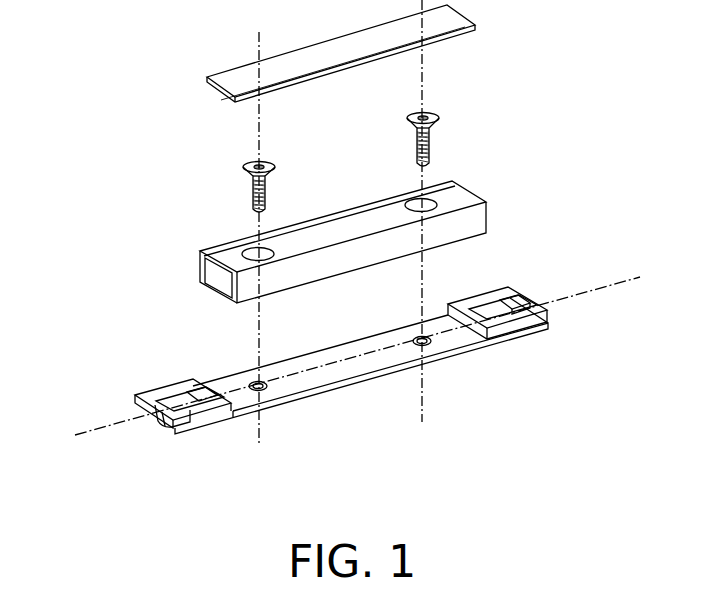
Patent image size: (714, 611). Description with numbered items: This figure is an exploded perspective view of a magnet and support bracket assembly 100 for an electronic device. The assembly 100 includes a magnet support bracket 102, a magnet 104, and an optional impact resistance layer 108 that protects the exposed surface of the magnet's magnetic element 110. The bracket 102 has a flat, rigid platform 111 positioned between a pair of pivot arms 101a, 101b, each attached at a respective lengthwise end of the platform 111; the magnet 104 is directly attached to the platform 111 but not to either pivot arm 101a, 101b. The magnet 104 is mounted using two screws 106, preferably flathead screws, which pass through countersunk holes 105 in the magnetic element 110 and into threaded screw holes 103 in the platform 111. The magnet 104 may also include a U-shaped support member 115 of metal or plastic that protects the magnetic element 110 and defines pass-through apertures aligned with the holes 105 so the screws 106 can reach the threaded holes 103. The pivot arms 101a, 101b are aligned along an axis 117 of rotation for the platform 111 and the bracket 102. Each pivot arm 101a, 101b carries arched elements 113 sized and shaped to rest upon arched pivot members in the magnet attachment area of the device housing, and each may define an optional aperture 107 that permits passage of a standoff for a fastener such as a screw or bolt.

The magnet and support bracket assembly 100 is at (392, 486).
The pivot arm 101a is at (123, 432).
The pivot arm 101b is at (559, 298).
The magnet support bracket 102 is at (343, 372).
The threaded screw holes 103 is at (429, 340).
The magnet 104 is at (339, 237).
The holes 105 is at (427, 206).
The screws 106 is at (408, 120).
The aperture 107 is at (186, 450).
The impact resistance layer 108 is at (207, 78).
The magnetic element 110 is at (380, 217).
The platform 111 is at (300, 380).
The arched elements 113 is at (527, 294).
The U-shaped support member 115 is at (275, 282).
The axis of rotation 117 is at (98, 428).